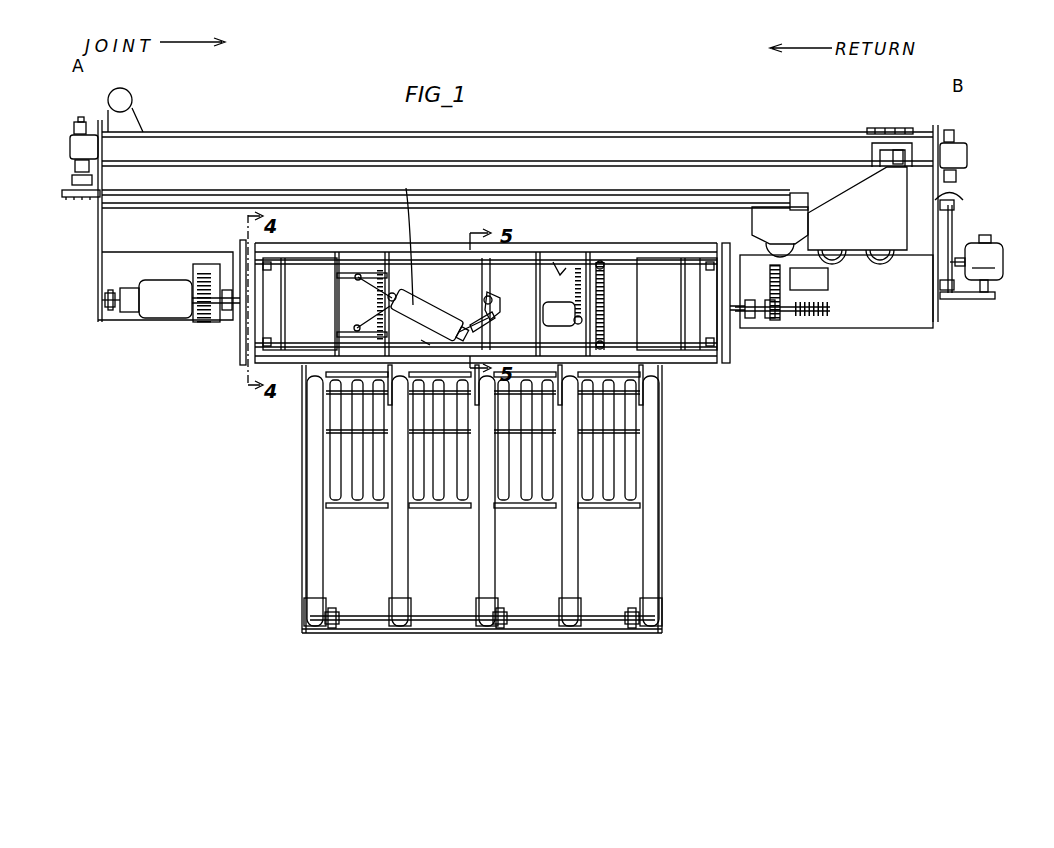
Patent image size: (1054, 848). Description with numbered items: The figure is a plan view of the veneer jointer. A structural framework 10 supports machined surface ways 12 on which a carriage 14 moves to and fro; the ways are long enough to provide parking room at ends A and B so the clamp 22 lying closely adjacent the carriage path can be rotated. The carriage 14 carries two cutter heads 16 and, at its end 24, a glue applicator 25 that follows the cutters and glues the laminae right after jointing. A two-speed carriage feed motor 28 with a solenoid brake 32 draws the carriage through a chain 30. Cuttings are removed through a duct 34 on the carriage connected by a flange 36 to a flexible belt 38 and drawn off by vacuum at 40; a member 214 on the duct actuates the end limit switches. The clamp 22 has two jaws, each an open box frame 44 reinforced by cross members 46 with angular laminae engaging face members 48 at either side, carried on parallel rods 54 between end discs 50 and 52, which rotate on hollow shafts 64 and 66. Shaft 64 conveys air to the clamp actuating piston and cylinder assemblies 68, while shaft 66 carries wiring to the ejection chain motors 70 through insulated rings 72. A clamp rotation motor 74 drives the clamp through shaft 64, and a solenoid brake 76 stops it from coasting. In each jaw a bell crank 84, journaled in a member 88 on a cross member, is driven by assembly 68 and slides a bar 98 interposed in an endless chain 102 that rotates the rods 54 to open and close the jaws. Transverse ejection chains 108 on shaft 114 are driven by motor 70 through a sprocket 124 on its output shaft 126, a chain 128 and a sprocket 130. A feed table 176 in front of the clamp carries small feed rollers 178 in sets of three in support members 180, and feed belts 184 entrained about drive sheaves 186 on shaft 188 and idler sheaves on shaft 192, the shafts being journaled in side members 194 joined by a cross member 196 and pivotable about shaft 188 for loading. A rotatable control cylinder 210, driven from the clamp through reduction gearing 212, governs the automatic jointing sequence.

The structural framework 10 is at (110, 224).
The machined surface ways 12 is at (692, 202).
The carriage 14 is at (873, 200).
The cutter heads 16 is at (878, 262).
The clamp 22 is at (584, 243).
The end of carriage 24 is at (807, 217).
The glue applicator 25 is at (785, 220).
The carriage feed motor 28 is at (992, 272).
The chain 30 is at (95, 200).
The solenoid brake 32 is at (991, 237).
The duct 34 is at (898, 158).
The flange 36 is at (873, 156).
The flexible belt 38 is at (750, 145).
The vacuum 40 is at (131, 96).
The open box frame 44 is at (664, 254).
The cross members 46 is at (292, 312).
The laminae engaging face members 48 is at (400, 247).
The end support member or disc 50 is at (241, 352).
The end support member or disc 52 is at (741, 343).
The longitudinally disposed parallel rods 54 is at (302, 262).
The shaft 64 is at (210, 320).
The shaft 66 is at (763, 320).
The clamp actuating pneumatic piston and cylinder assemblies 68 is at (418, 305).
The ejection chain motors 70 is at (598, 337).
The insulated rings 72 is at (812, 322).
The clamp rotation motor 74 is at (153, 303).
The solenoid brake 76 is at (102, 313).
The bell crank 84 is at (500, 318).
The member 88 is at (502, 300).
The bar 98 is at (484, 298).
The endless chain 102 is at (491, 273).
The endless chains 108 is at (376, 312).
The shaft 114 is at (421, 340).
The sprocket 124 is at (602, 289).
The motor output shaft 126 is at (603, 316).
The chain 128 is at (574, 288).
The sprocket 130 is at (603, 270).
The feed table 176 is at (523, 639).
The small feed rollers 178 is at (632, 453).
The support members 180 is at (596, 507).
The feed belts 184 is at (316, 556).
The drive sheaves 186 is at (580, 612).
The shaft 188 is at (425, 622).
The shaft 192 is at (355, 390).
The side members 194 is at (303, 492).
The cross member 196 is at (352, 437).
The rotatable control cylinder 210 is at (818, 278).
The reduction gearing 212 is at (770, 293).
The member 214 is at (882, 128).